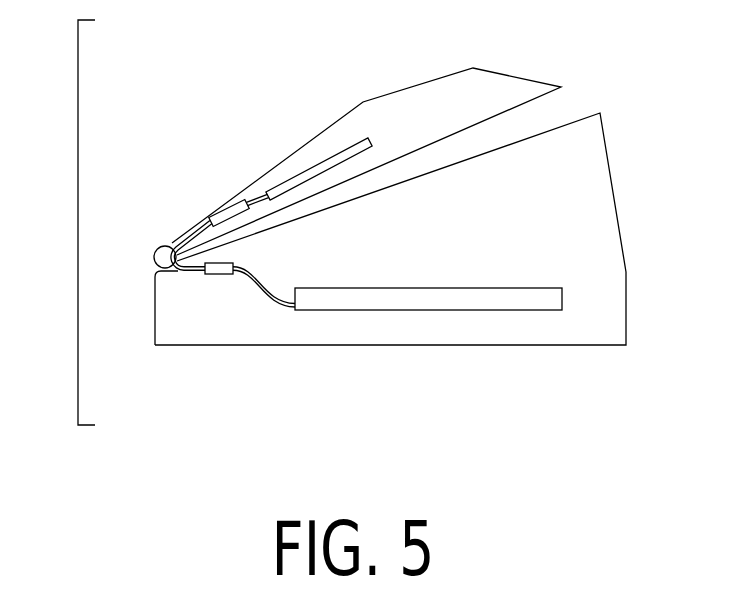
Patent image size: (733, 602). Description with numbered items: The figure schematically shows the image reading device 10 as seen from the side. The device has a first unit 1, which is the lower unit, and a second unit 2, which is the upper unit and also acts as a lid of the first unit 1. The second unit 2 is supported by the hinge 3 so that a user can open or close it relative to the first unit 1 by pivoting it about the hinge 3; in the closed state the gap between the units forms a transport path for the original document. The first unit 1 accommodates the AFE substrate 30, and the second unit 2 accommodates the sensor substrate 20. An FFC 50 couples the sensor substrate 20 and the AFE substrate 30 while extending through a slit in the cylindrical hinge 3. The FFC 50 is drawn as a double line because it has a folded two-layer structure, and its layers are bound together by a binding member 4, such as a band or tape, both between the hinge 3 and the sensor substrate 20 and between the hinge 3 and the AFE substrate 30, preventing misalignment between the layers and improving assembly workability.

The first unit 1 is at (614, 250).
The second unit 2 is at (328, 133).
The hinge 3 is at (155, 257).
The binding member 4 is at (212, 216).
The image reading device 10 is at (76, 223).
The sensor substrate 20 is at (283, 181).
The AFE substrate 30 is at (492, 307).
The FFC 50 is at (269, 292).